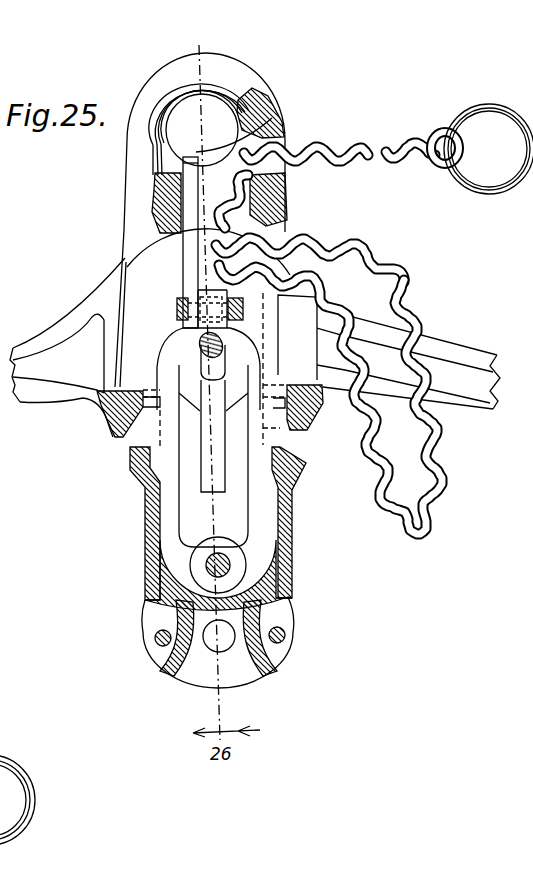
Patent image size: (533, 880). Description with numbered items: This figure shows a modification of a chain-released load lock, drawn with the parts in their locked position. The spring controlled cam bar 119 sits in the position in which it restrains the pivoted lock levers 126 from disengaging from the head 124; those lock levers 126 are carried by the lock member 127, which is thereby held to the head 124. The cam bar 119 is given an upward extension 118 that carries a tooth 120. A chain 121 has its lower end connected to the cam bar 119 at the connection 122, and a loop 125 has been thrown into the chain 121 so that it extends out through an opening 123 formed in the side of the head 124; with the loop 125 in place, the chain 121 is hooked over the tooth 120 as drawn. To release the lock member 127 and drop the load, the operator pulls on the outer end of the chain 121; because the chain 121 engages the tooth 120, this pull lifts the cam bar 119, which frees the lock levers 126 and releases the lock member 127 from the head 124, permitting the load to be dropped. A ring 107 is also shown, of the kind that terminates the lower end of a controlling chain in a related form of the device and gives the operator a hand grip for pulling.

The ring 107 is at (22, 773).
The upward extension 118 is at (192, 157).
The cam bar 119 is at (188, 357).
The tooth 120 is at (278, 203).
The chain 121 is at (402, 137).
The connection of chain to cam bar 122 is at (212, 262).
The opening 123 is at (300, 224).
The head 124 is at (127, 258).
The loop 125 is at (400, 313).
The lock levers 126 is at (262, 508).
The lock member 127 is at (147, 572).